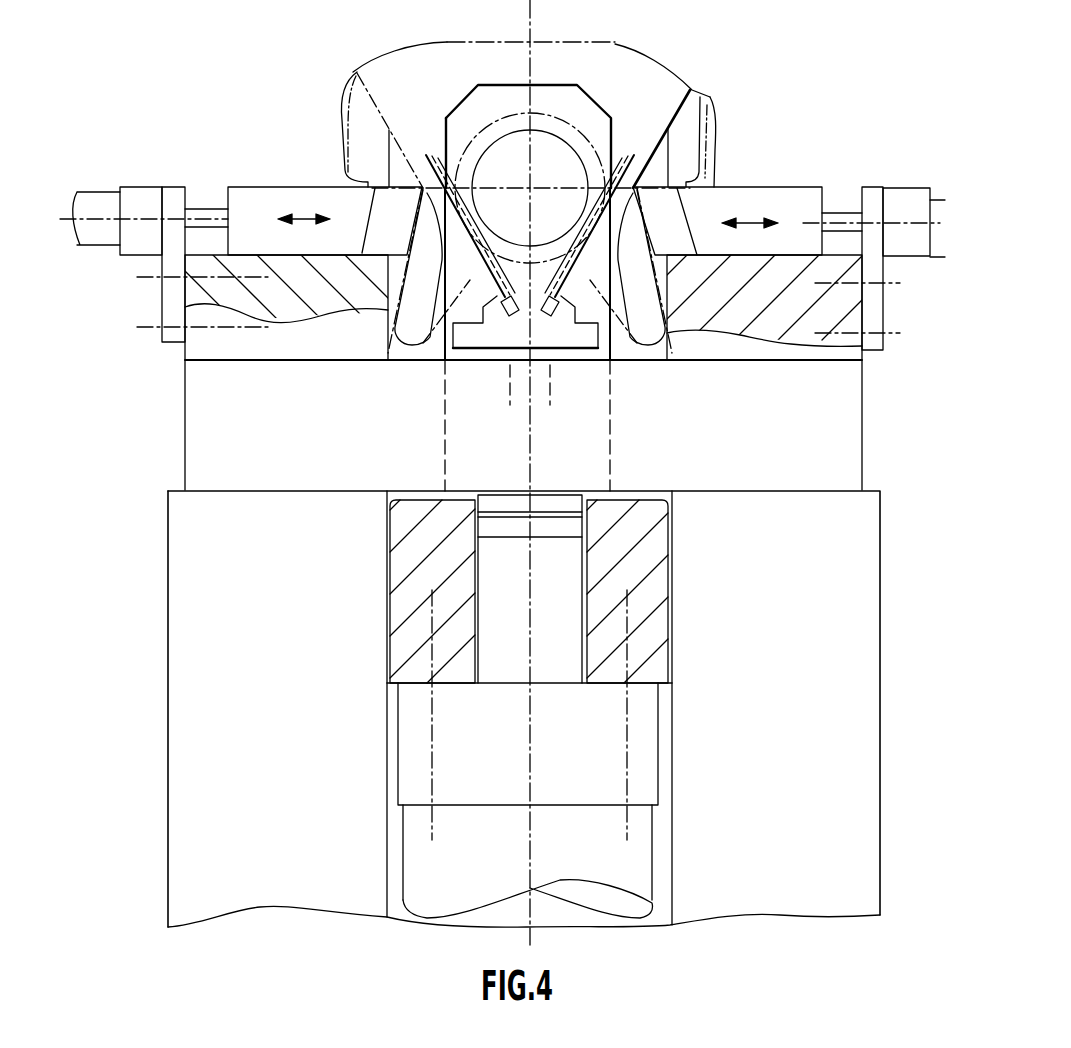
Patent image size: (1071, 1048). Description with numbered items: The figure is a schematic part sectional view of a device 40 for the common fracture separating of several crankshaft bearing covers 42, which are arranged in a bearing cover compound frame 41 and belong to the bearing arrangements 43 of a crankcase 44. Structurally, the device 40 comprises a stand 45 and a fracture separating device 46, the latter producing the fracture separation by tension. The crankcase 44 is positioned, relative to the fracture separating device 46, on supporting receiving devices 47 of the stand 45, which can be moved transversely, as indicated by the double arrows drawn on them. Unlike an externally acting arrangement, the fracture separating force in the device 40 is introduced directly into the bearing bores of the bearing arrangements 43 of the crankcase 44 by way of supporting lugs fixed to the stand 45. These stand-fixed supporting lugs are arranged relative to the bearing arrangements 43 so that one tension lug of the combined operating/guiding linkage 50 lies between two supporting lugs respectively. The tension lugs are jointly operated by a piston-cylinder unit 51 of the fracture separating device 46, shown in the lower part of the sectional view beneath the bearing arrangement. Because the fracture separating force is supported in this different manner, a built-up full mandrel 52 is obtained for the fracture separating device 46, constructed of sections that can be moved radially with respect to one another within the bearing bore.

The device 40 is at (228, 72).
The bearing cover compound frame 41 is at (391, 342).
The bearing covers 42 is at (441, 342).
The bearing arrangements 43 is at (644, 134).
The crankcase 44 is at (713, 106).
The stand 45 is at (258, 890).
The fracture separating device 46 is at (622, 350).
The supporting receiving devices 47 is at (270, 215).
The combined operating/guiding linkage 50 is at (612, 440).
The piston-cylinder unit 51 is at (493, 855).
The full mandrel 52 is at (520, 171).